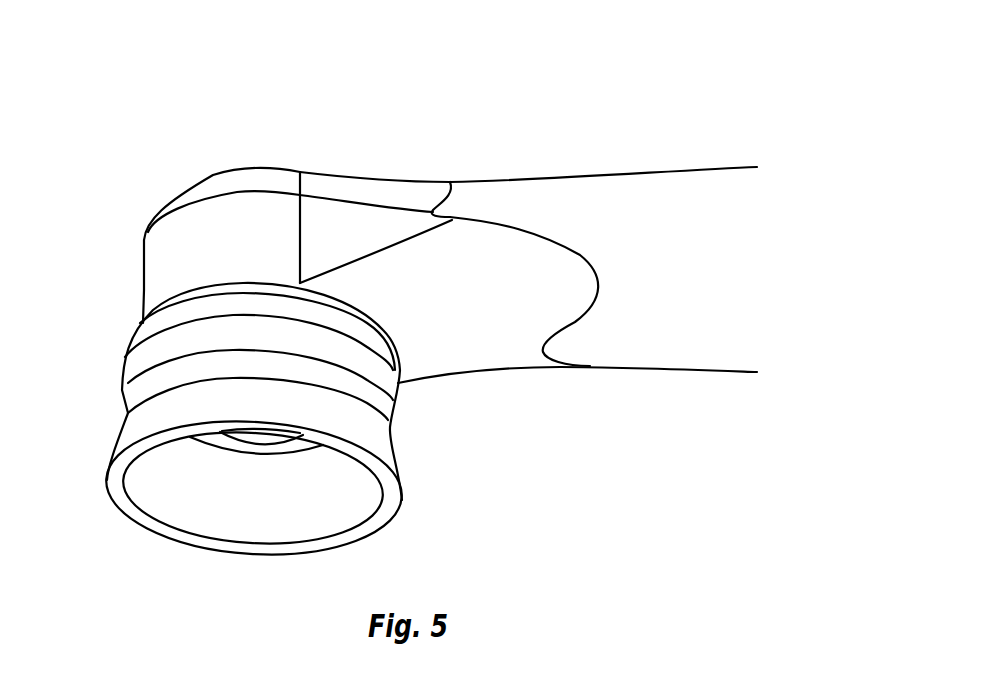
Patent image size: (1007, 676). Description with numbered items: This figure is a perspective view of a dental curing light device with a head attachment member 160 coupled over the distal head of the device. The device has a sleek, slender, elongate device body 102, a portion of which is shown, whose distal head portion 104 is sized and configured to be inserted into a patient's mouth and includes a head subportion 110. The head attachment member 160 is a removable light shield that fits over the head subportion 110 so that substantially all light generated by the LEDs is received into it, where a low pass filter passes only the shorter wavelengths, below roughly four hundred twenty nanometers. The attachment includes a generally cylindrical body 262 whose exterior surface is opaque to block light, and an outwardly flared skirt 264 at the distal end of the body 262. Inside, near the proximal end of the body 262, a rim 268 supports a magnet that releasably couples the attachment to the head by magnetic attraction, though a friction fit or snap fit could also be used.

The distal head portion 104 is at (448, 98).
The head subportion 110 is at (160, 267).
The device body 102 is at (470, 350).
The head attachment member 160 is at (473, 483).
The body 262 is at (140, 315).
The outwardly flared skirt 264 is at (128, 432).
The rim 268 is at (223, 438).